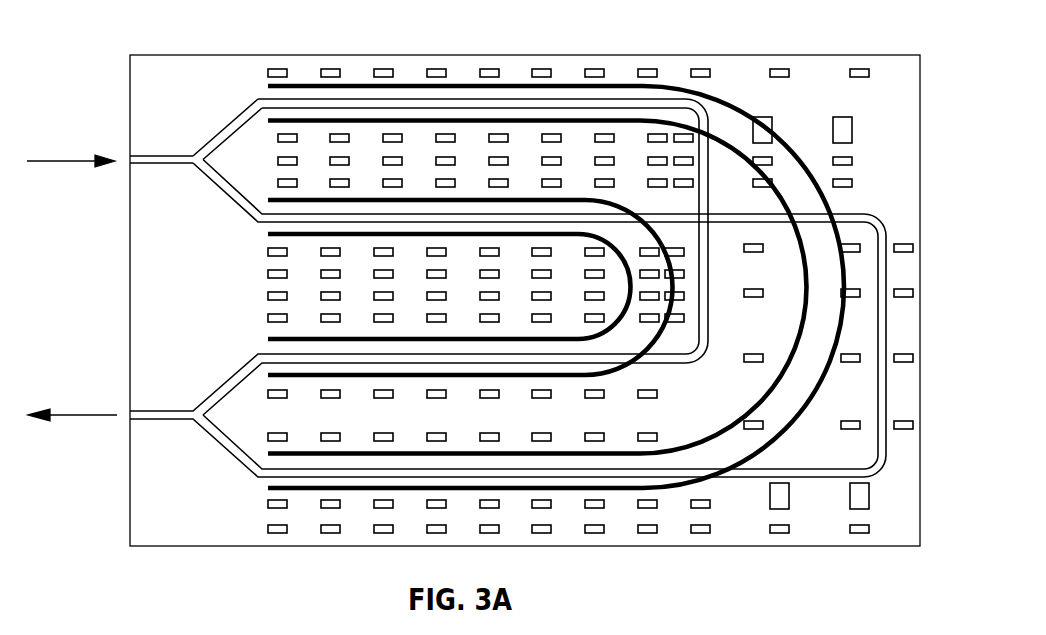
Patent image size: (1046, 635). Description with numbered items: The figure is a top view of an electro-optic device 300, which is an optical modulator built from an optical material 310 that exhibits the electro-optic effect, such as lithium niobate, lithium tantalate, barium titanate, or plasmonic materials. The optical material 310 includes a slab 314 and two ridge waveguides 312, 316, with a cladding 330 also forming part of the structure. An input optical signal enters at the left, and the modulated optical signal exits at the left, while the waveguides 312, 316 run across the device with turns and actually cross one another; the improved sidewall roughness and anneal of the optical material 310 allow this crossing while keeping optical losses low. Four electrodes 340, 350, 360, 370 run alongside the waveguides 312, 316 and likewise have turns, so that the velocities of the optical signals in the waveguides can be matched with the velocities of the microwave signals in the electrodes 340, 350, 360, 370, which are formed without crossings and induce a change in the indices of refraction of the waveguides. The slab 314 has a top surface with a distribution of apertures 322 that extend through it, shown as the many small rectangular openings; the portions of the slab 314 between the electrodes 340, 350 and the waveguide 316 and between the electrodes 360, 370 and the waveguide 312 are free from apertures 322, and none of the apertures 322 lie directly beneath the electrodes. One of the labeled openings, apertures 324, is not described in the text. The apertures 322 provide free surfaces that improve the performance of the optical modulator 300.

The electro-optic device 300 is at (88, 50).
The optical material 310 is at (128, 508).
The ridge waveguide 312 is at (227, 207).
The slab 314 is at (419, 245).
The ridge waveguide 316 is at (212, 130).
The apertures 322 is at (270, 530).
The contact pad 324 is at (852, 503).
The cladding 330 is at (419, 257).
The electrode 340 is at (420, 85).
The electrode 350 is at (722, 135).
The electrode 360 is at (268, 339).
The electrode 370 is at (262, 376).